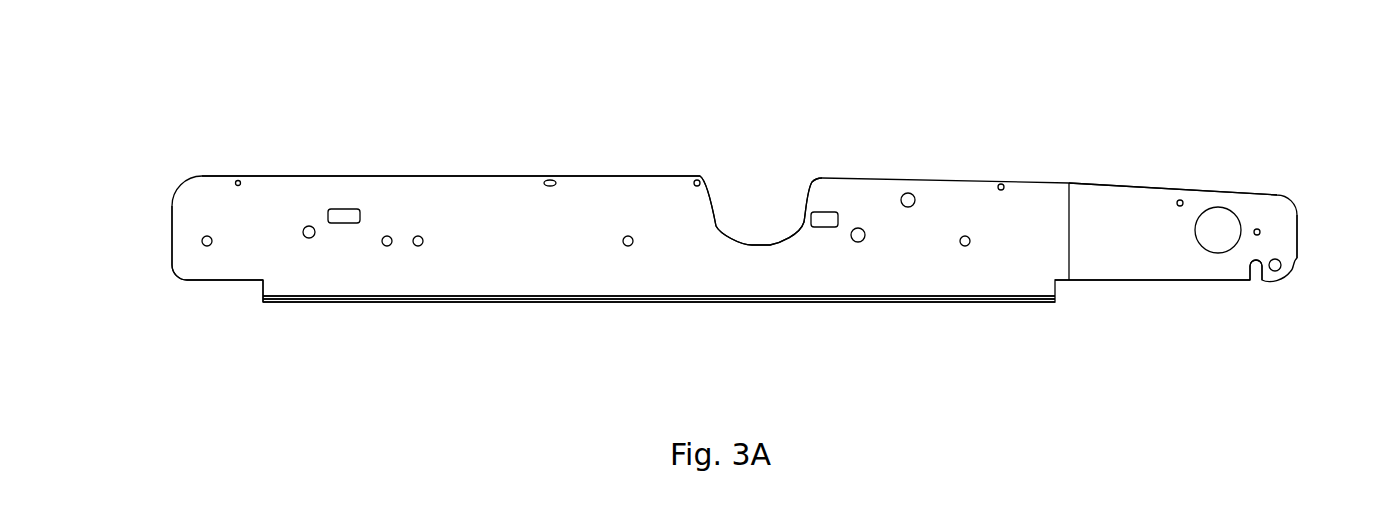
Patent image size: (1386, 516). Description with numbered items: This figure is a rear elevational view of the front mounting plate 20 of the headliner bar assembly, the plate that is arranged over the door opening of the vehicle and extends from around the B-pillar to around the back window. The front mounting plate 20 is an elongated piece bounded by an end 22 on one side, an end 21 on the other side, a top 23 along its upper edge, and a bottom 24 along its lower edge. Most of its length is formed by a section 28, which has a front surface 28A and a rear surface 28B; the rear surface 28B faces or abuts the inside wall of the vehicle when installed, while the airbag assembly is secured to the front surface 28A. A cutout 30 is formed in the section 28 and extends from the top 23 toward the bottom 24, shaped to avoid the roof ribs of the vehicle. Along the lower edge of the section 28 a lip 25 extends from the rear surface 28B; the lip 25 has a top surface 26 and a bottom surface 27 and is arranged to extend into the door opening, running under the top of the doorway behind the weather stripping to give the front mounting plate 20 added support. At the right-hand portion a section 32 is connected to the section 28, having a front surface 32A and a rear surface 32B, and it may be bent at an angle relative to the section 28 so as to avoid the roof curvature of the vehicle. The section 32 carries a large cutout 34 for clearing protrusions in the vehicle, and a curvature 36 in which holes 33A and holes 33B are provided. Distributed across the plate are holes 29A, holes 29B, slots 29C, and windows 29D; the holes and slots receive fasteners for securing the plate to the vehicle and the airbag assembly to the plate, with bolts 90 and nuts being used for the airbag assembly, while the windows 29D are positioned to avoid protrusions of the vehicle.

The front mounting plate 20 is at (894, 61).
The end 21 is at (1298, 227).
The end 22 is at (172, 232).
The top 23 is at (433, 176).
The bottom 24 is at (227, 280).
The lip 25 is at (827, 303).
The top surface 26 is at (1005, 296).
The bottom surface 27 is at (957, 303).
The section 28 is at (412, 209).
The front surface 28A is at (883, 178).
The rear surface 28B is at (602, 272).
The holes 29A is at (387, 246).
The holes 29B is at (697, 178).
The slots 29C is at (548, 178).
The windows 29D is at (341, 209).
The cutout 30 is at (762, 203).
The section 32 is at (1142, 222).
The front surface 32A is at (1095, 182).
The rear surface 32B is at (1140, 260).
The holes 33A is at (1275, 271).
The holes 33B is at (1257, 228).
The cutout 34 is at (1218, 217).
The curvature 36 is at (1259, 277).
The bolts 90 is at (305, 228).